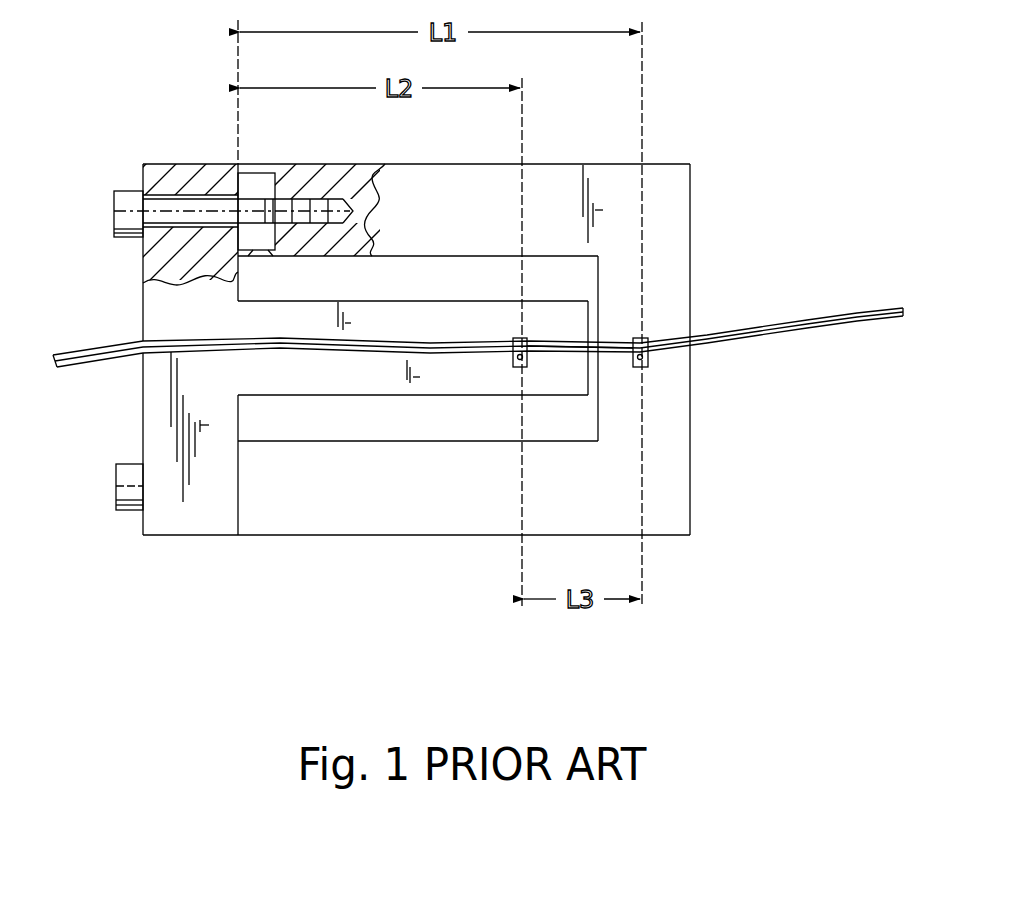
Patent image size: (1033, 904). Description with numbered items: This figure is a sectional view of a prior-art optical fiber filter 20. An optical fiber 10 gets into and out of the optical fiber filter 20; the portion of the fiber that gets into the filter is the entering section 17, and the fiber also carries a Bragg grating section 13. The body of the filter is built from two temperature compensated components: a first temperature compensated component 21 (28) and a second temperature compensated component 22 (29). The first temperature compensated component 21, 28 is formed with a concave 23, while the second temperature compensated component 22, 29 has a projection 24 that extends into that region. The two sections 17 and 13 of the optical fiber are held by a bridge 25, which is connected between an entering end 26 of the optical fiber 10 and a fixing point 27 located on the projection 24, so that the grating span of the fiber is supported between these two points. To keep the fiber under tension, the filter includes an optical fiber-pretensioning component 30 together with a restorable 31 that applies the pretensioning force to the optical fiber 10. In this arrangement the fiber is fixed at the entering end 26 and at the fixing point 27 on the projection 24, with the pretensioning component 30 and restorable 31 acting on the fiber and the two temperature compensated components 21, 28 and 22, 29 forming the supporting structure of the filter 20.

The optical fiber 10 is at (767, 327).
The Bragg grating section 13 is at (594, 343).
The entering section of the optical fiber 17 is at (557, 345).
The optical fiber filter 20 is at (350, 572).
The first temperature compensated component 21 is at (400, 540).
The second temperature compensated component 22 is at (197, 540).
The concave 23 is at (452, 436).
The projection 24 is at (342, 377).
The bridge 25 is at (678, 382).
The entering end 26 is at (632, 364).
The fixing point 27 is at (512, 357).
The first temperature compensated component 28 is at (461, 180).
The second temperature compensated component 29 is at (177, 176).
The optical fiber-pretensioning component 30 is at (122, 190).
The restorable 31 is at (257, 253).